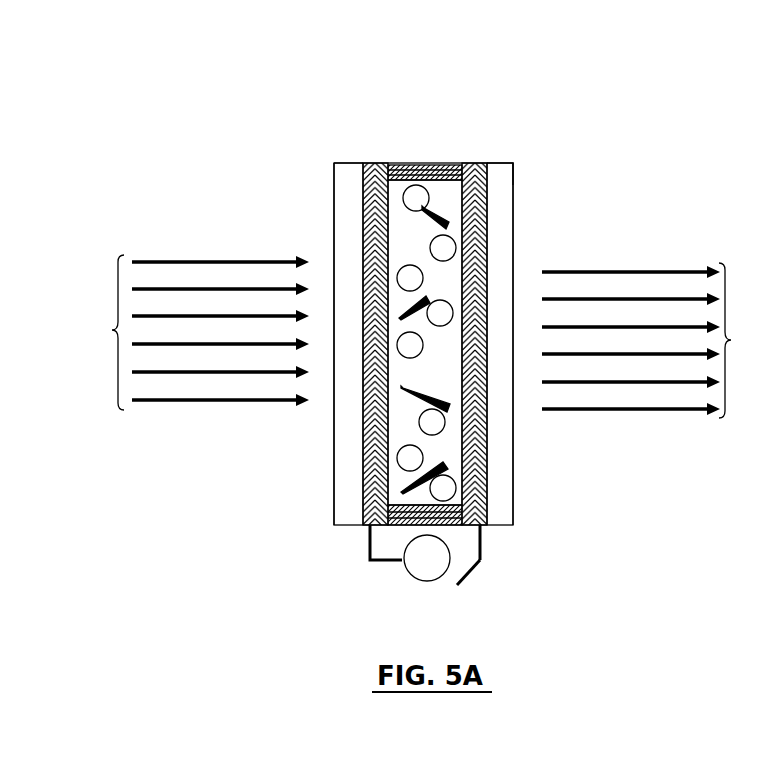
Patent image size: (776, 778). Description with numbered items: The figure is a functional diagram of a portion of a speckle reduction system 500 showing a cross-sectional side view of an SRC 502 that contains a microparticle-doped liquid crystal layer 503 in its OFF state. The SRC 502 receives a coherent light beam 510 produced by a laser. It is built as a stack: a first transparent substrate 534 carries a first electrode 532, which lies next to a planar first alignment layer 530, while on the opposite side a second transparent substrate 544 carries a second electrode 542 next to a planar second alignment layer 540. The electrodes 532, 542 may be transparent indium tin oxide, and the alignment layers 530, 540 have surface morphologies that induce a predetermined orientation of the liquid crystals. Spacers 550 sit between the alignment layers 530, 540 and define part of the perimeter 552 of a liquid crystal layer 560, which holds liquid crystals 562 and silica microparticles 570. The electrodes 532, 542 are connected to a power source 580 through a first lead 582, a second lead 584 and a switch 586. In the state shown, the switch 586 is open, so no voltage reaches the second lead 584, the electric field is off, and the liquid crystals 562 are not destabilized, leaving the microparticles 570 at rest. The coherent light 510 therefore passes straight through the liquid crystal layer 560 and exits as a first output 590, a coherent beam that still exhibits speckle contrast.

The speckle reduction system 500 is at (362, 93).
The SRC 502 is at (513, 168).
The microparticle-doped liquid crystal layer 503 is at (465, 160).
The coherent light beam 510 is at (190, 332).
The first alignment layer 530 is at (334, 163).
The first electrode 532 is at (363, 210).
The first transparent substrate 534 is at (334, 240).
The second alignment layer 540 is at (487, 170).
The second electrode 542 is at (485, 195).
The second transparent substrate 544 is at (513, 240).
The spacers 550 is at (468, 177).
The perimeter 552 is at (384, 158).
The liquid crystal layer 560 is at (437, 287).
The liquid crystals 562 is at (405, 470).
The microparticles 570 is at (448, 480).
The power source 580 is at (436, 583).
The first lead 582 is at (368, 548).
The second lead 584 is at (481, 547).
The switch 586 is at (470, 575).
The first output 590 is at (655, 340).